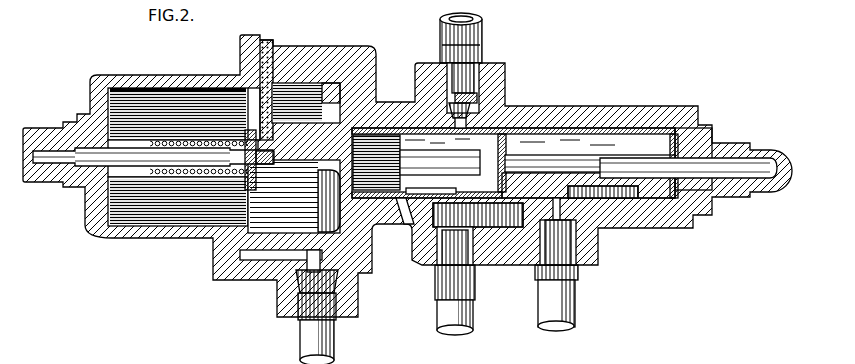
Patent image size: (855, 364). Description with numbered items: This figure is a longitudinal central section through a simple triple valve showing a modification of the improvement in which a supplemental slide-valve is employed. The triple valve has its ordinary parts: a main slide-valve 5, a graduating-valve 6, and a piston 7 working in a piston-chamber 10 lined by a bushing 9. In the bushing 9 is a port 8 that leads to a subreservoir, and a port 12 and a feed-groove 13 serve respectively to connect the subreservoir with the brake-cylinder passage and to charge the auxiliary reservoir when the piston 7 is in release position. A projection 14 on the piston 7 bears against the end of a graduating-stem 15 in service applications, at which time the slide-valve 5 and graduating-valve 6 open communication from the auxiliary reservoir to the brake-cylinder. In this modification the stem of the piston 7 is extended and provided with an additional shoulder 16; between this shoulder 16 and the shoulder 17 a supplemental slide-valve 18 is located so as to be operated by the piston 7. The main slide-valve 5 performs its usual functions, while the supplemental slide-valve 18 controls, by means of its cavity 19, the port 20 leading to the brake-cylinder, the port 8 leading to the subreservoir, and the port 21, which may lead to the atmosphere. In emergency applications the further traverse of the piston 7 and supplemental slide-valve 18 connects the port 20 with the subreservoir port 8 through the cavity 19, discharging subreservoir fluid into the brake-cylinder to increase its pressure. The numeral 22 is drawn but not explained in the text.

The main slide-valve 5 is at (440, 162).
The graduating-valve 6 is at (455, 244).
The piston 7 is at (328, 194).
The port 8 is at (567, 207).
The bushing 9 is at (300, 77).
The piston-chamber 10 is at (201, 201).
The port 12 is at (410, 198).
The feed-groove 13 is at (337, 77).
The projection 14 is at (294, 196).
The graduating-stem 15 is at (153, 157).
The additional shoulder 16 is at (688, 170).
The shoulder 17 is at (590, 154).
The supplemental slide-valve 18 is at (665, 184).
The cavity 19 is at (620, 190).
The port 20 is at (478, 269).
The port 21 is at (604, 228).
The spring 22 is at (566, 186).